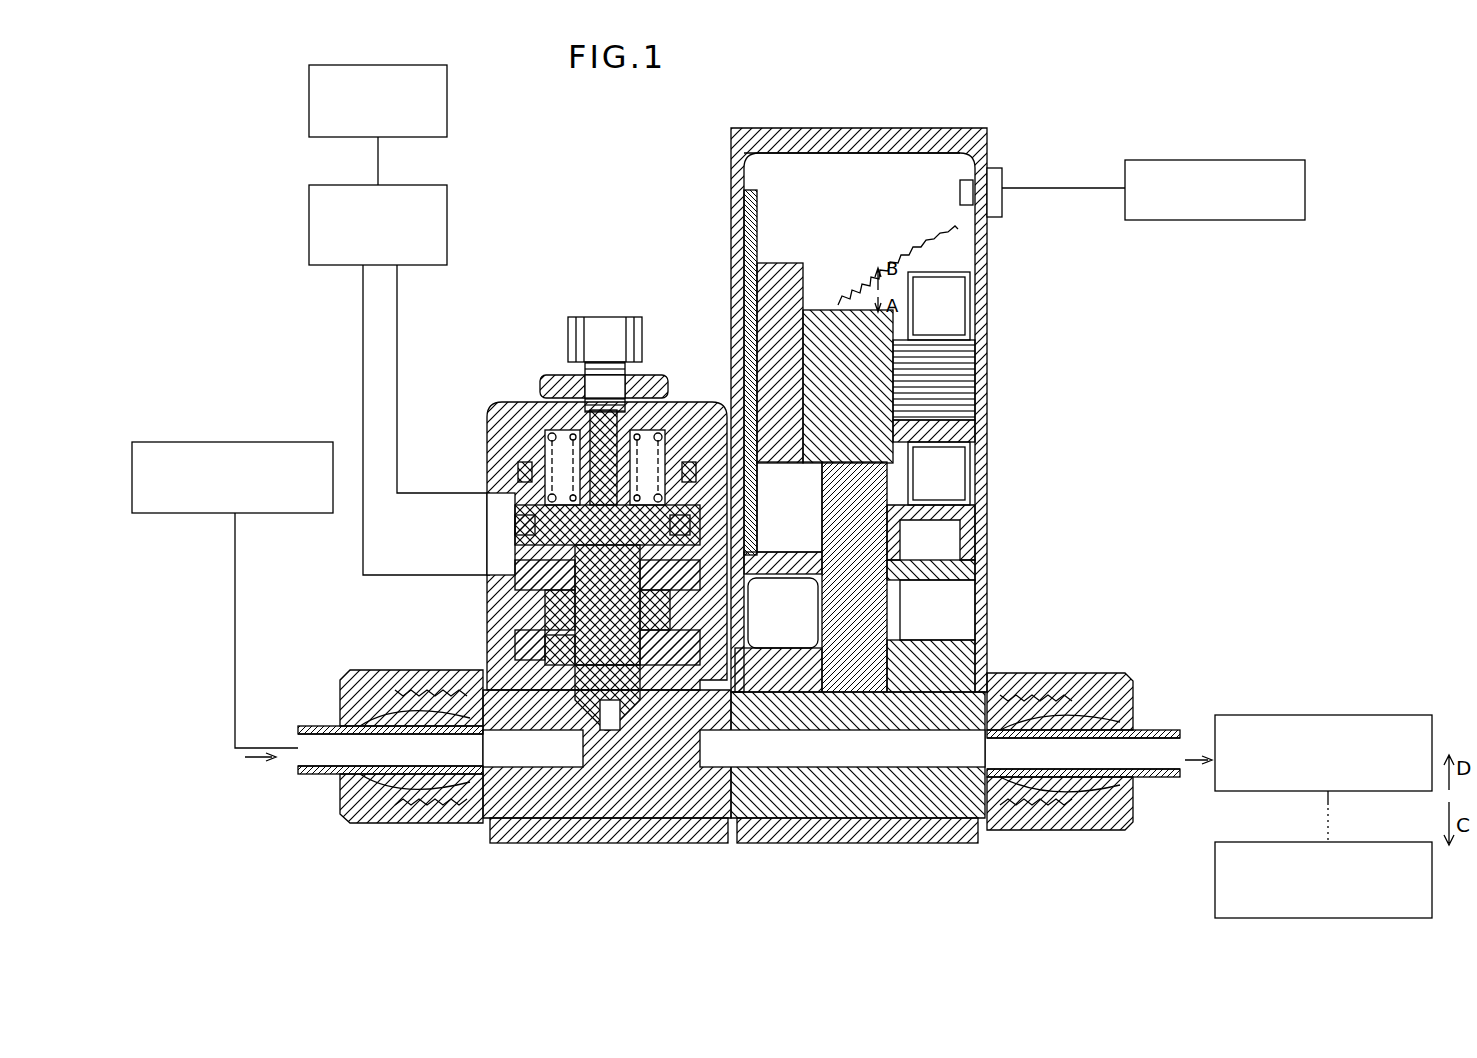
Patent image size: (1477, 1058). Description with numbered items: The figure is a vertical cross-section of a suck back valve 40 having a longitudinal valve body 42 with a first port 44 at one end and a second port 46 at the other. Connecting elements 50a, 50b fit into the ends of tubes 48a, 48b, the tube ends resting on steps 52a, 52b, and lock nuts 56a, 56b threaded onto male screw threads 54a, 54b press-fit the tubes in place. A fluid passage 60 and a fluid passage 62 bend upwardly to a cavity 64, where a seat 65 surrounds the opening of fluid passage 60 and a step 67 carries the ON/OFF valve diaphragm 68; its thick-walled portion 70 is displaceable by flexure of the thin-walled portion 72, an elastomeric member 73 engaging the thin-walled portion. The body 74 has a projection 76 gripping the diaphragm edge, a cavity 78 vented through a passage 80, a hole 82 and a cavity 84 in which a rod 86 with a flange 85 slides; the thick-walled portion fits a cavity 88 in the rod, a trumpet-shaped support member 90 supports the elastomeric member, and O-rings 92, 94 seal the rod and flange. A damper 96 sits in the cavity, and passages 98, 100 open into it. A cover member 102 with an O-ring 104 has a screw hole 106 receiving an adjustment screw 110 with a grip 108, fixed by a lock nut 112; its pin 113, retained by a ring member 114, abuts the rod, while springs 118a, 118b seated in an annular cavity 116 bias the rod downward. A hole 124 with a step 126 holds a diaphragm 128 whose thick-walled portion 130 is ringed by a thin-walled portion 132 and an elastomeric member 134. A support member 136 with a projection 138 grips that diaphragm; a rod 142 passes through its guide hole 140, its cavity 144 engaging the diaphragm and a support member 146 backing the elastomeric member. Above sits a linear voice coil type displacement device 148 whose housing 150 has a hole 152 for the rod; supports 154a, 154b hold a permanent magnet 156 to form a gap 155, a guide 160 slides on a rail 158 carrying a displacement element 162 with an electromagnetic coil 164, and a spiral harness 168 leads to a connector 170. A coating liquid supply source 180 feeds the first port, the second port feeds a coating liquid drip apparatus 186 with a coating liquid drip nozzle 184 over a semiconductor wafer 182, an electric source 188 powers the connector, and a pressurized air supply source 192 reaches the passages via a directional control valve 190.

The suck back valve 40 is at (1008, 94).
The valve body 42 is at (757, 825).
The first port 44 is at (360, 820).
The second port 46 is at (1085, 830).
The tube 48a is at (318, 726).
The tube 48b is at (1150, 730).
The connecting element 50a is at (445, 810).
The connecting element 50b is at (993, 690).
The step 52a is at (420, 830).
The step 52b is at (1030, 680).
The male screw thread 54a is at (390, 820).
The male screw thread 54b is at (1065, 710).
The lock nut 56a is at (348, 680).
The lock nut 56b is at (1105, 673).
The fluid passage 60 is at (542, 758).
The fluid passage 62 is at (737, 758).
The cavity 64 is at (565, 800).
The seat 65 is at (585, 800).
The step 67 is at (540, 800).
The ON/OFF valve diaphragm 68 is at (625, 790).
The thick-walled portion 70 is at (605, 790).
The thin-walled portion 72 is at (650, 800).
The elastomeric member 73 is at (670, 795).
The body 74 is at (545, 540).
The projection 76 is at (505, 820).
The cavity 78 is at (545, 650).
The passage 80 is at (530, 645).
The hole 82 is at (540, 600).
The cavity 84 is at (515, 575).
The flange 85 is at (520, 530).
The rod 86 is at (672, 570).
The cavity 88 is at (665, 600).
The support member 90 is at (670, 640).
The O-ring 92 is at (560, 605).
The O-ring 94 is at (487, 505).
The damper 96 is at (530, 590).
The passage 98 is at (490, 572).
The passage 100 is at (487, 470).
The cover member 102 is at (540, 410).
The O-ring 104 is at (565, 445).
The screw hole 106 is at (655, 385).
The grip 108 is at (600, 320).
The adjustment screw 110 is at (603, 335).
The lock nut 112 is at (648, 395).
The pin 113 is at (545, 437).
The ring member 114 is at (665, 445).
The annular cavity 116 is at (560, 375).
The spring 118a is at (592, 425).
The spring 118b is at (555, 430).
The hole 124 is at (925, 790).
The step 126 is at (935, 790).
The diaphragm 128 is at (870, 800).
The thick-walled portion 130 is at (835, 790).
The thin-walled portion 132 is at (880, 790).
The elastomeric member 134 is at (800, 800).
The support member 136 is at (980, 600).
The projection 138 is at (965, 840).
The guide hole 140 is at (978, 578).
The rod 142 is at (880, 565).
The cavity 144 is at (950, 680).
The support member 146 is at (790, 640).
The linear voice coil type displacement device 148 is at (886, 120).
The housing 150 is at (790, 100).
The hole 152 is at (962, 545).
The support 154a is at (965, 482).
The support 154b is at (975, 280).
The gap 155 is at (980, 456).
The permanent magnet 156 is at (950, 320).
The rail 158 is at (757, 200).
The guide 160 is at (780, 263).
The displacement element 162 is at (822, 310).
The electromagnetic coil 164 is at (960, 388).
The harness 168 is at (858, 250).
The connector 170 is at (995, 168).
The coating liquid supply source 180 is at (233, 442).
The semiconductor wafer 182 is at (1215, 862).
The coating liquid drip nozzle 184 is at (1328, 803).
The coating liquid drip apparatus 186 is at (1268, 715).
The electric source 188 is at (1208, 220).
The directional control valve 190 is at (309, 245).
The pressurized air supply source 192 is at (309, 92).